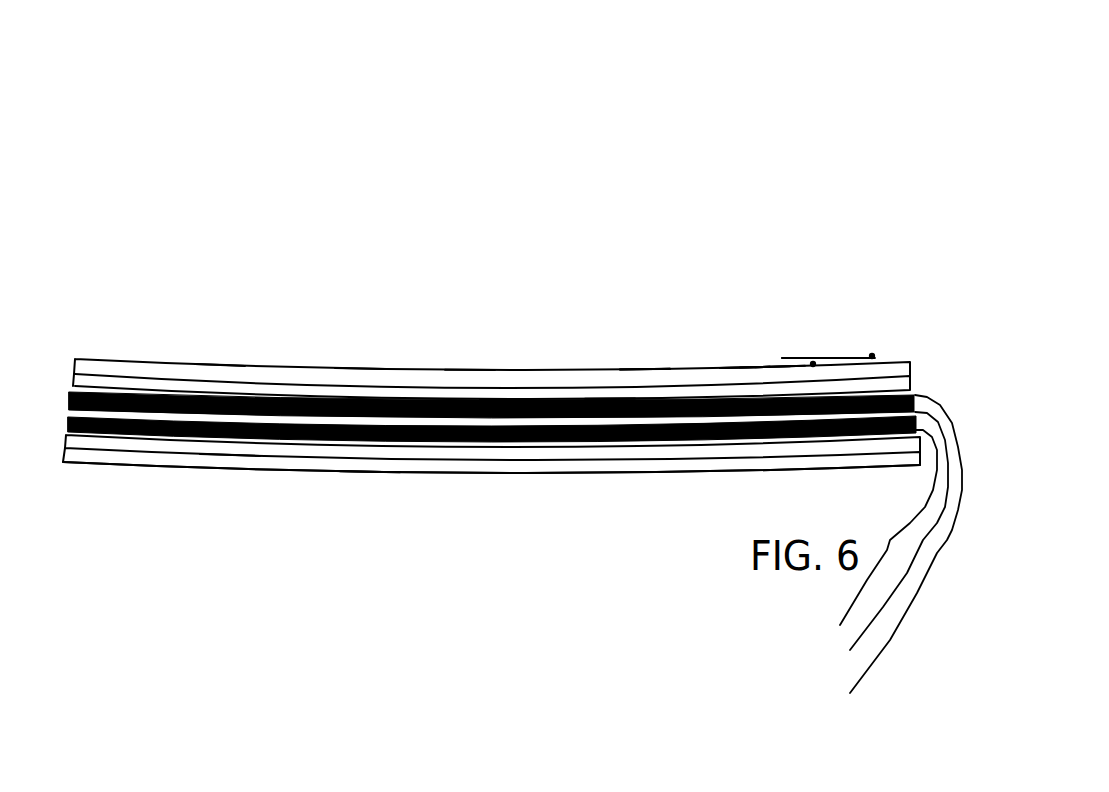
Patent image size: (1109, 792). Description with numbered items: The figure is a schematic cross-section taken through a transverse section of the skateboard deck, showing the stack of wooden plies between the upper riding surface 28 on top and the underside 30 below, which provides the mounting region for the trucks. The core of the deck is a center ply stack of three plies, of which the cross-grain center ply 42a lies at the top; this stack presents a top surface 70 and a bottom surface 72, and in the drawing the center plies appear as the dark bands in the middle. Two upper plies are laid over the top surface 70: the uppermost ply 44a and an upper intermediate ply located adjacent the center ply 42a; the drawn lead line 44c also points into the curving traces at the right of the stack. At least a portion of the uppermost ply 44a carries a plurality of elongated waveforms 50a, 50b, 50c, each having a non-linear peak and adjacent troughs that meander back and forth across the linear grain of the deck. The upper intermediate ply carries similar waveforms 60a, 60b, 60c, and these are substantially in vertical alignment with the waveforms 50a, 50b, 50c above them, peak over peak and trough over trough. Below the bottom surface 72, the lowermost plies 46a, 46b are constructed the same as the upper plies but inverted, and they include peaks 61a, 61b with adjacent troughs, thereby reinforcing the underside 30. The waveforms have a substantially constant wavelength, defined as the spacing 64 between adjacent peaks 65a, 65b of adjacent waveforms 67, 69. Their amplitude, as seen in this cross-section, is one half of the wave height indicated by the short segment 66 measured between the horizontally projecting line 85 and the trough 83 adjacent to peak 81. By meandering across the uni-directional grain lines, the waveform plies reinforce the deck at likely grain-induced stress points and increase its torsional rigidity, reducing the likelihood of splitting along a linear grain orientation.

The upper foot bearing or riding surface 28 is at (198, 363).
The underside or undersurface 30 is at (613, 477).
The center ply 42a is at (867, 538).
The uppermost ply 44a is at (90, 368).
The third layer 44c is at (882, 555).
The lowermost ply 46a is at (83, 440).
The lowermost ply 46b is at (118, 458).
The elongated waveform 50a is at (233, 354).
The elongated waveform 50b is at (358, 351).
The elongated waveform 50c is at (473, 352).
The waveform 60a is at (507, 380).
The waveform 60b is at (610, 383).
The waveform 60c is at (778, 360).
The peak 61a is at (227, 473).
The peak 61b is at (375, 478).
The spacing 64 is at (752, 352).
The peak 65a is at (648, 362).
The peak 65b is at (745, 360).
The short segment 66 is at (872, 357).
The waveform 67 is at (651, 353).
The waveform 69 is at (763, 360).
The top surface 70 is at (472, 400).
The bottom surface 72 is at (485, 442).
The peak 81 is at (817, 367).
The trough 83 is at (813, 360).
The horizontally projecting line 85 is at (813, 363).